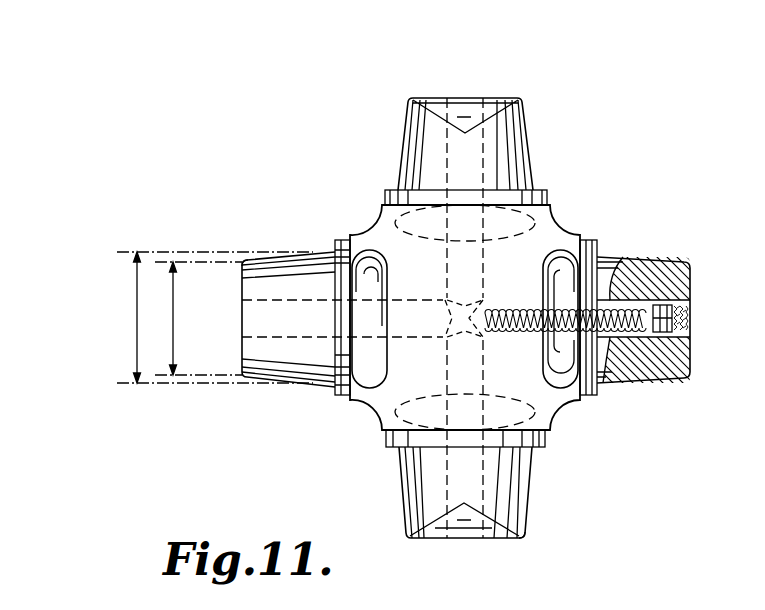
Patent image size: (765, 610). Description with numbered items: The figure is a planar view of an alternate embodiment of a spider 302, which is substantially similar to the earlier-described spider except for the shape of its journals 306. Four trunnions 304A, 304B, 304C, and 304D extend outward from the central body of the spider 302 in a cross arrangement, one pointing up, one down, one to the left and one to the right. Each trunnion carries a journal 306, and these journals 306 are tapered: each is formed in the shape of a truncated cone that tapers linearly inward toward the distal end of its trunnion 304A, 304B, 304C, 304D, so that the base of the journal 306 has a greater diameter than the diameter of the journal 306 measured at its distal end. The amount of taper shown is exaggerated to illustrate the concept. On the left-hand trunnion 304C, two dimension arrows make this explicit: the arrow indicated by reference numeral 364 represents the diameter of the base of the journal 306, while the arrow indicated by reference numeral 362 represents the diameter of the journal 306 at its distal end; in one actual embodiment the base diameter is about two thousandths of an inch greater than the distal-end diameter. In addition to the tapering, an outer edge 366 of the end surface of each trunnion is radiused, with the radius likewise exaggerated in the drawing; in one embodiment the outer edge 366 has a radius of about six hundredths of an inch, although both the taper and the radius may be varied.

The spider 302 is at (560, 227).
The trunnion 304A is at (517, 98).
The trunnion 304B is at (493, 540).
The trunnion 304C is at (242, 310).
The trunnion 304D is at (692, 362).
The journal 306 is at (532, 137).
The arrow indicating journal distal-end diameter 362 is at (177, 347).
The arrow indicating journal base diameter 364 is at (138, 323).
The outer edge of trunnion end surface 366 is at (243, 262).